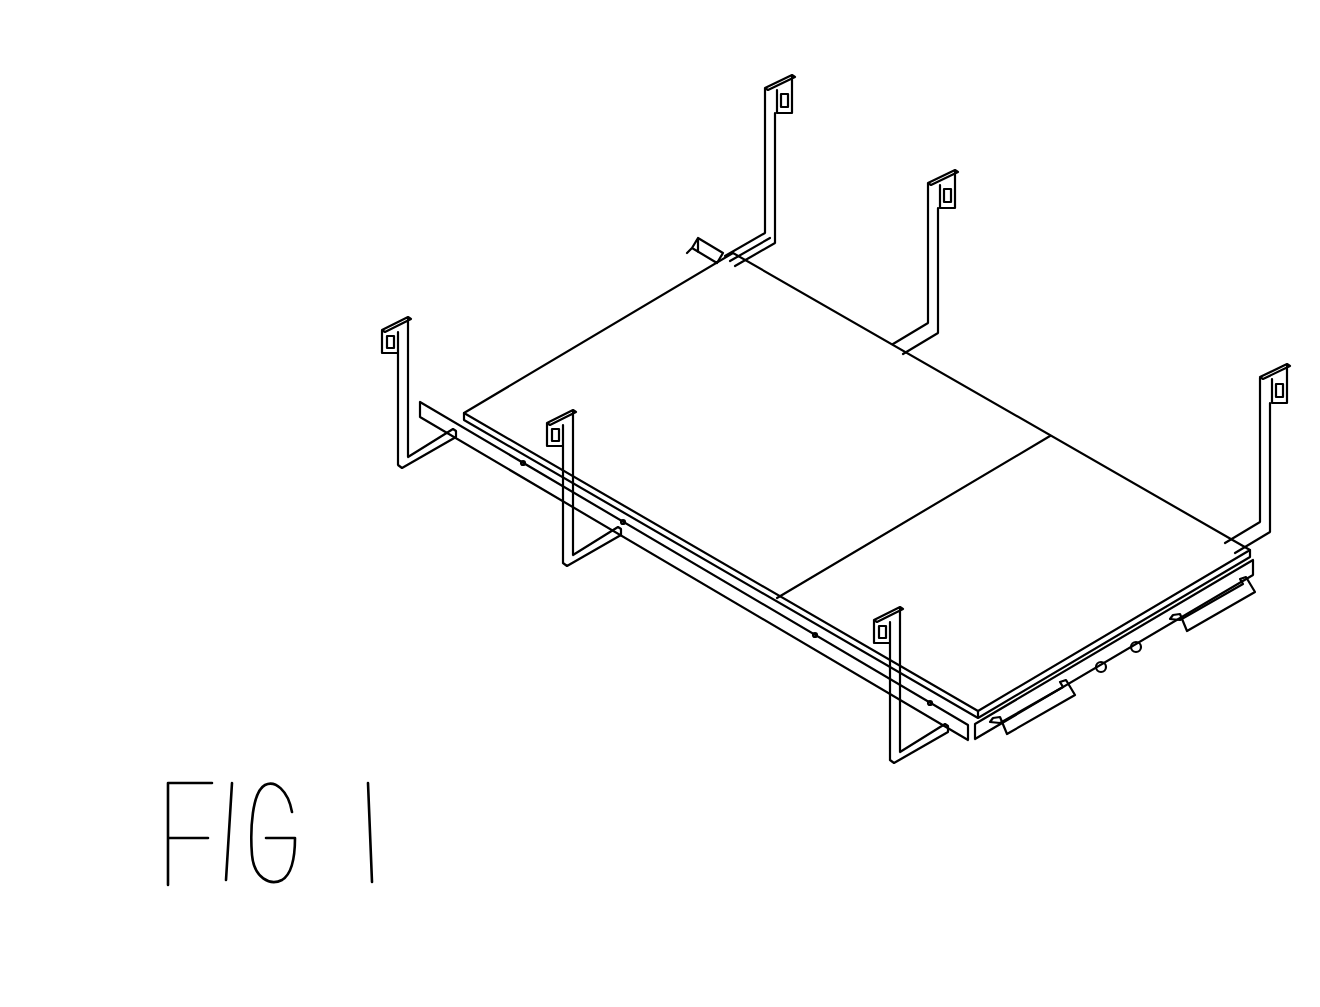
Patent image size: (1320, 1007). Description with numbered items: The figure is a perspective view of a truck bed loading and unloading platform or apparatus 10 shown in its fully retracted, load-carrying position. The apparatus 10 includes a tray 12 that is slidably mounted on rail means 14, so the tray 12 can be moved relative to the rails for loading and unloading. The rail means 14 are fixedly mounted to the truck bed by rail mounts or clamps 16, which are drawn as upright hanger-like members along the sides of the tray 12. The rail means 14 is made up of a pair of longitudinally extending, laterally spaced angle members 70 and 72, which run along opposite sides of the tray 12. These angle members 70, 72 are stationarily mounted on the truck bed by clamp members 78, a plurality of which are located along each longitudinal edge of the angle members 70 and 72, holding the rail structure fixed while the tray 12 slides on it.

The truck bed loading and unloading platform or apparatus 10 is at (786, 449).
The tray 12 is at (857, 485).
The rail means 14 is at (1099, 710).
The rail mounts or clamps 16 is at (767, 401).
The angle member 70 is at (626, 571).
The angle member 72 is at (592, 229).
The clamp member 78 is at (1246, 353).